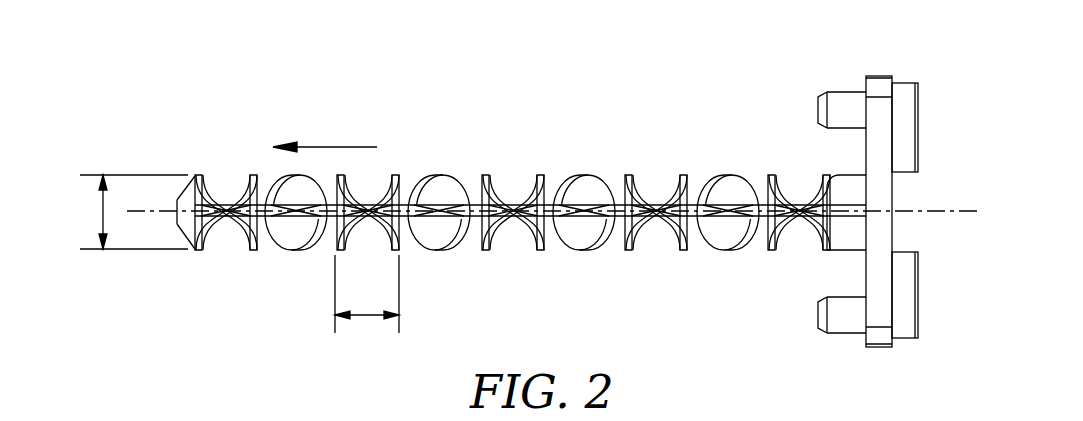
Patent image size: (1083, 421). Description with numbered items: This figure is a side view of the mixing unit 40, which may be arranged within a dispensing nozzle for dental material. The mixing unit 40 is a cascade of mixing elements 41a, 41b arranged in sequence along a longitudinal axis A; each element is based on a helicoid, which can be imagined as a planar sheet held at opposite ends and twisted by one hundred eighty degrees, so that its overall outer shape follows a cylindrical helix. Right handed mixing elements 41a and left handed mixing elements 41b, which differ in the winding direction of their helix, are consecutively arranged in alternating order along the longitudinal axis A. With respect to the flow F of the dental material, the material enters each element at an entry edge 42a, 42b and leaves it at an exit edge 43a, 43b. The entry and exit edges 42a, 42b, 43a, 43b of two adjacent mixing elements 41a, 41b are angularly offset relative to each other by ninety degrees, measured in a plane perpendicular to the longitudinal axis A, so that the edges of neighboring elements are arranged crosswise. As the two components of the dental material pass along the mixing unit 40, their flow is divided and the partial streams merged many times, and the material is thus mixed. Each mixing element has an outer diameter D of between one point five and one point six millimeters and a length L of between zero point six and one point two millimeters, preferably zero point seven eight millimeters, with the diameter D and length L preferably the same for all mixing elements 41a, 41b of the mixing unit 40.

The mixing unit 40 is at (531, 92).
The right handed mixing element 41a is at (782, 177).
The left handed mixing element 41b is at (722, 249).
The entry edge 42a is at (689, 178).
The entry edge 42b is at (758, 249).
The exit edge 43a is at (762, 178).
The exit edge 43b is at (703, 249).
The longitudinal axis A is at (953, 210).
The outer diameter D is at (134, 212).
The flow F is at (325, 133).
The length L is at (367, 303).